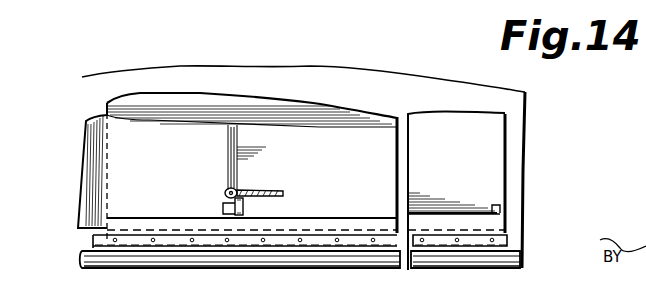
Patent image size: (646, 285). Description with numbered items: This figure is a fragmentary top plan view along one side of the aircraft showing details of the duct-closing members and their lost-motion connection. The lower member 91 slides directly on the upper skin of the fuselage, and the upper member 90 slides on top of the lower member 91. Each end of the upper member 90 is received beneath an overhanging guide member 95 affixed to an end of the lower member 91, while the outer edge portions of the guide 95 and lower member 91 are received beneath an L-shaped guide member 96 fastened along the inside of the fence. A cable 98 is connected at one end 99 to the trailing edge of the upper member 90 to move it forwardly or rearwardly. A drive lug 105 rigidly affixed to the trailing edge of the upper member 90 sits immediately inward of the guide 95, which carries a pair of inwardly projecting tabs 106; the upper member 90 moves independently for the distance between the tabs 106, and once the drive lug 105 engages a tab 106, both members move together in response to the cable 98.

The upper member 90 is at (179, 147).
The lower member 91 is at (498, 123).
The overhanging guide member 95 is at (462, 220).
The L-shaped guide member 96 is at (514, 240).
The cable 98 is at (283, 192).
The one end of cable 99 is at (240, 189).
The drive lug 105 is at (244, 206).
The inwardly projecting tab 106 is at (497, 212).